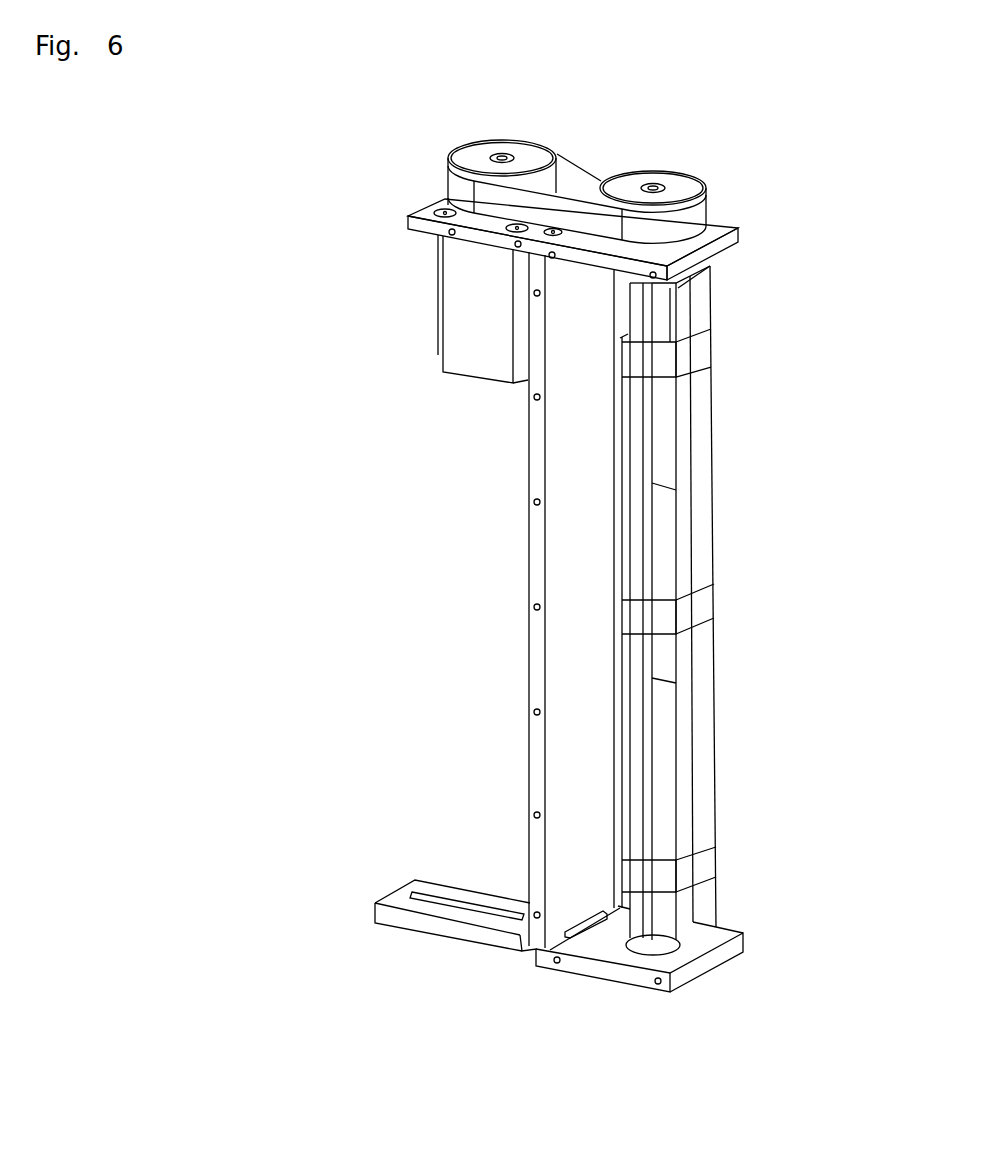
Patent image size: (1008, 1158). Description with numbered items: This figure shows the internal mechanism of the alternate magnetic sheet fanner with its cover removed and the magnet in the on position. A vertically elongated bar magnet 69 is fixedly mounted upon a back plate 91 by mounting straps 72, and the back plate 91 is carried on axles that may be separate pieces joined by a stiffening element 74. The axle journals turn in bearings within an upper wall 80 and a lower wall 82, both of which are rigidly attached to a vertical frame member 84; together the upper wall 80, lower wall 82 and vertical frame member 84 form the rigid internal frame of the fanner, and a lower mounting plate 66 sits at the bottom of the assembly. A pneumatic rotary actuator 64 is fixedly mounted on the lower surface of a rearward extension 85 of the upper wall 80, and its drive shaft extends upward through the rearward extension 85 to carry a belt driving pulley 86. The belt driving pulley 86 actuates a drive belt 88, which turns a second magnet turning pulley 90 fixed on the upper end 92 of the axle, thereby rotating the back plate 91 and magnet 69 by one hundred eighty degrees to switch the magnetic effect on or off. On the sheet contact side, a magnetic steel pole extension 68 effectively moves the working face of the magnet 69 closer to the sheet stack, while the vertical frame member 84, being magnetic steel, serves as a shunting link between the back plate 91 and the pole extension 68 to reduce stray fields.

The pneumatic rotary actuator 64 is at (478, 333).
The lower mounting plate 66 is at (478, 938).
The pole extension 68 is at (700, 475).
The bar magnet 69 is at (667, 537).
The mounting straps 72 is at (700, 352).
The stiffening element 74 is at (625, 645).
The upper wall 80 is at (722, 253).
The lower wall 82 is at (712, 963).
The vertical frame member 84 is at (538, 523).
The rearward extension 85 is at (425, 227).
The belt driving pulley 86 is at (473, 156).
The drive belt 88 is at (585, 178).
The magnet turning pulley 90 is at (650, 187).
The back plate 91 is at (642, 720).
The upper end 92 is at (688, 186).